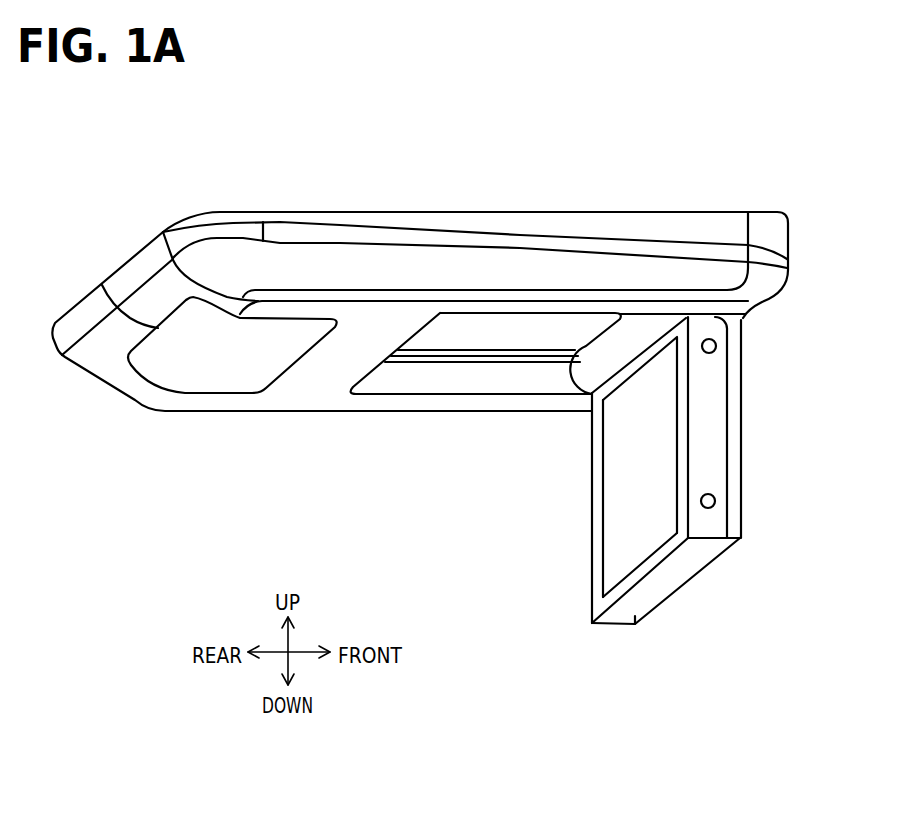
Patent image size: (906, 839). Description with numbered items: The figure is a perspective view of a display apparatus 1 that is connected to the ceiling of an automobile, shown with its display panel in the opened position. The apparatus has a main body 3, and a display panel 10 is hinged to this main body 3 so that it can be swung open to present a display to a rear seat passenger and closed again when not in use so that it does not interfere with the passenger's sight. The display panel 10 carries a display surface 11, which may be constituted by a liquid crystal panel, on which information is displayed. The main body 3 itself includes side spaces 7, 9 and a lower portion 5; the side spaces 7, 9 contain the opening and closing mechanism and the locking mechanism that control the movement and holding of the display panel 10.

The display apparatus 1 is at (738, 183).
The main body 3 is at (370, 188).
The lower portion 5 is at (313, 390).
The side space 7 is at (545, 265).
The side space 9 is at (507, 403).
The display panel 10 is at (662, 470).
The display surface 11 is at (630, 508).